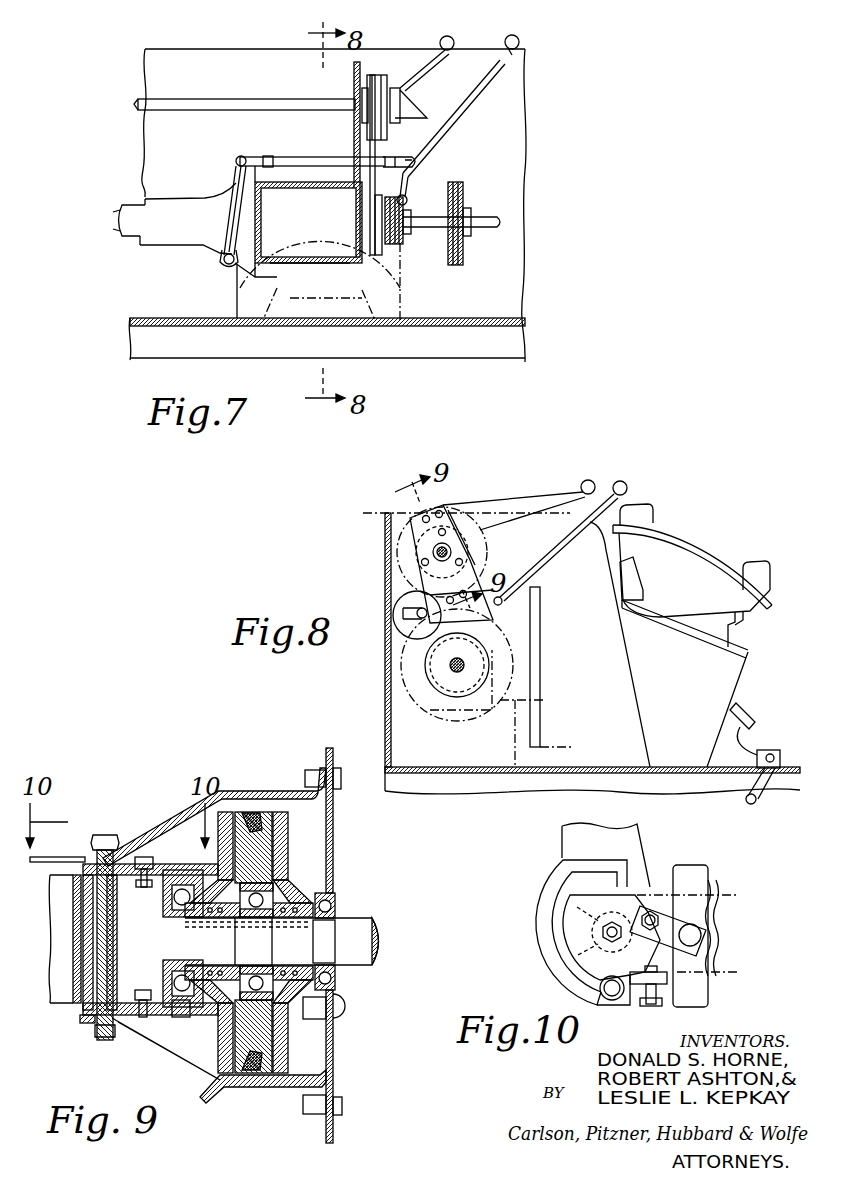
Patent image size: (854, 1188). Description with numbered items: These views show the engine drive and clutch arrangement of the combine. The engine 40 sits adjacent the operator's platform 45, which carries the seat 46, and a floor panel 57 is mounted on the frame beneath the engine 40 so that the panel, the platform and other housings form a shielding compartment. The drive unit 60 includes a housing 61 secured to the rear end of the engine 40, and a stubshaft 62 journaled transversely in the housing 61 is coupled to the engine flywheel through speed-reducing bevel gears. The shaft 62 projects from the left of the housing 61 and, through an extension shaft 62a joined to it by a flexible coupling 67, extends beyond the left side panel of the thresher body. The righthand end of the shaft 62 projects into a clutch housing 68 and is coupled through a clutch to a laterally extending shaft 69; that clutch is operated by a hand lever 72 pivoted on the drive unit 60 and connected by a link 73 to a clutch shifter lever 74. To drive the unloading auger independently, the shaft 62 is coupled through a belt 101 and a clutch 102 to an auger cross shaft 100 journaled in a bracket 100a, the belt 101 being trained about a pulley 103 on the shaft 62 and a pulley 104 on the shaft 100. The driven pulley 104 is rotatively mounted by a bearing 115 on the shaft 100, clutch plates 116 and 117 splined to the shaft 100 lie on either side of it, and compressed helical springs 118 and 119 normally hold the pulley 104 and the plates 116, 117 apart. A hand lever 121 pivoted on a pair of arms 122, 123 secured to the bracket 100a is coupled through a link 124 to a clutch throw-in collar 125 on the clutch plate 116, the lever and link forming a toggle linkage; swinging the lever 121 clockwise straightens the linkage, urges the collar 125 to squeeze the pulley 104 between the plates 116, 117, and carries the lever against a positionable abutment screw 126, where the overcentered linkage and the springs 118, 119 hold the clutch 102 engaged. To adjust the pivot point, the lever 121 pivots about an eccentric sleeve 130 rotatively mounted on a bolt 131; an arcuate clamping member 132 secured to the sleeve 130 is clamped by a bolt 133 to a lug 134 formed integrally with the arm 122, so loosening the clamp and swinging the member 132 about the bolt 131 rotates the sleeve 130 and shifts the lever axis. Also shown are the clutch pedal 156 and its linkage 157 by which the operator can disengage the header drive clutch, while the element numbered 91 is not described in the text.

In FIG. 8, the engine 40 is at (565, 752).
In FIG. 8, the operator's platform 45 is at (745, 690).
In FIG. 8, the seat 46 is at (708, 560).
In FIG. 7, the floor panel 57 is at (445, 318).
In FIG. 8, the floor panel 57 is at (665, 767).
In FIG. 7, the drive unit 60 is at (258, 272).
In FIG. 8, the drive unit 60 is at (502, 728).
In FIG. 7, the housing 61 is at (305, 263).
In FIG. 7, the stubshaft 62 is at (362, 222).
In FIG. 8, the stubshaft 62 is at (447, 692).
In FIG. 7, the extension shaft 62a is at (485, 216).
In FIG. 7, the flexible coupling 67 is at (405, 245).
In FIG. 7, the clutch housing 68 is at (170, 210).
In FIG. 7, the laterally extending shaft 69 is at (128, 215).
In FIG. 7, the hand lever 72 is at (470, 103).
In FIG. 8, the hand lever 72 is at (628, 490).
In FIG. 7, the link 73 is at (290, 157).
In FIG. 7, the clutch shifter lever 74 is at (232, 181).
In FIG. 7, the pulley 91 is at (462, 190).
In FIG. 7, the auger cross shaft 100 is at (266, 99).
In FIG. 8, the auger cross shaft 100 is at (445, 545).
In FIG. 9, the auger cross shaft 100 is at (360, 930).
In FIG. 7, the bracket 100a is at (354, 125).
In FIG. 8, the bracket 100a is at (413, 530).
In FIG. 9, the bracket 100a is at (333, 850).
In FIG. 7, the belt 101 is at (384, 155).
In FIG. 8, the belt 101 is at (478, 568).
In FIG. 9, the belt 101 is at (258, 810).
In FIG. 7, the clutch 102 is at (398, 84).
In FIG. 9, the clutch 102 is at (240, 788).
In FIG. 7, the pulley 103 is at (398, 268).
In FIG. 8, the pulley 103 is at (432, 666).
In FIG. 7, the driven pulley 104 is at (378, 86).
In FIG. 8, the driven pulley 104 is at (417, 615).
In FIG. 9, the driven pulley 104 is at (258, 843).
In FIG. 9, the bearing 115 is at (272, 884).
In FIG. 9, the clutch plate 116 is at (226, 1076).
In FIG. 9, the clutch plate 117 is at (300, 1108).
In FIG. 9, the compressed helical spring 118 is at (240, 962).
In FIG. 9, the compressed helical spring 119 is at (292, 962).
In FIG. 7, the hand lever 121 is at (450, 36).
In FIG. 8, the hand lever 121 is at (587, 480).
In FIG. 9, the hand lever 121 is at (62, 1002).
In FIG. 10, the hand lever 121 is at (625, 838).
In FIG. 9, the bracket arm 122 is at (132, 845).
In FIG. 10, the bracket arm 122 is at (603, 907).
In FIG. 9, the bracket arm 123 is at (165, 1060).
In FIG. 9, the link 124 is at (165, 1020).
In FIG. 10, the link 124 is at (663, 908).
In FIG. 9, the clutch throw-in collar 125 is at (165, 990).
In FIG. 10, the clutch throw-in collar 125 is at (704, 875).
In FIG. 10, the abutment screw 126 is at (650, 1006).
In FIG. 9, the eccentric sleeve 130 is at (116, 905).
In FIG. 10, the eccentric sleeve 130 is at (558, 920).
In FIG. 9, the bolt 131 is at (105, 935).
In FIG. 10, the bolt 131 is at (603, 933).
In FIG. 9, the arcuate clamping member 132 is at (40, 857).
In FIG. 10, the arcuate clamping member 132 is at (572, 882).
In FIG. 10, the bolt 133 is at (573, 985).
In FIG. 10, the lug 134 is at (600, 995).
In FIG. 8, the clutch pedal 156 is at (753, 726).
In FIG. 8, the linkage 157 is at (758, 798).